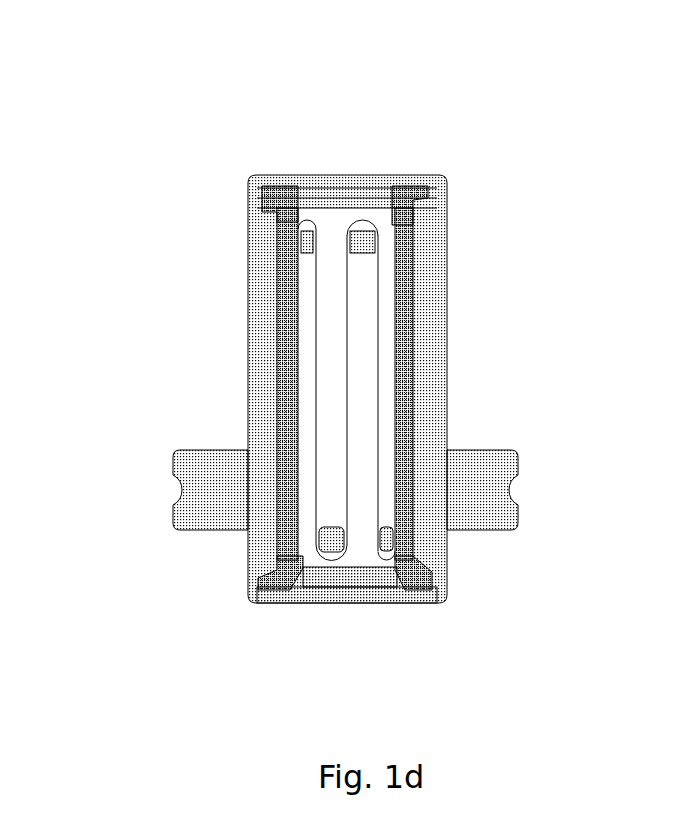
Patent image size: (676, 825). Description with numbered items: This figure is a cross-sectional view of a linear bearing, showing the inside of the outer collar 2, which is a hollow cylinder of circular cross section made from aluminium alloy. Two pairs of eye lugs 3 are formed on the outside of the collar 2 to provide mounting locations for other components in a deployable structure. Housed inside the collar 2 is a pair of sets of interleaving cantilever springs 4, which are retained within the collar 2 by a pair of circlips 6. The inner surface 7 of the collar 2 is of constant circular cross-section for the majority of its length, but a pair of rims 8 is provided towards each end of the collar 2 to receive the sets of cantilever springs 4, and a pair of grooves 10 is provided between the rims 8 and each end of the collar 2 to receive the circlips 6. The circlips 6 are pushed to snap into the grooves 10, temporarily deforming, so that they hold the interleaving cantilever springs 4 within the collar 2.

The outer collar 2 is at (265, 228).
The eye lugs 3 is at (208, 513).
The cantilever springs 4 is at (323, 215).
The circlips 6 is at (355, 190).
The inner surface 7 is at (277, 365).
The rims 8 is at (417, 207).
The grooves 10 is at (265, 188).